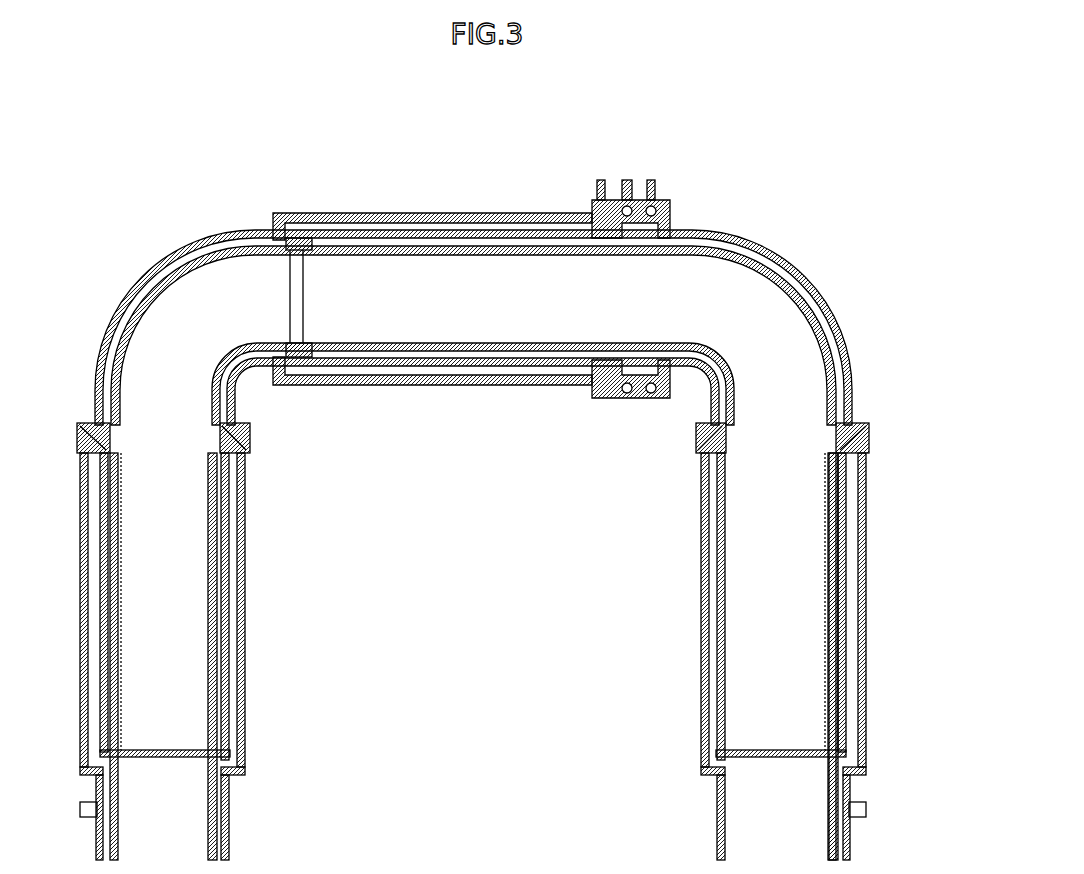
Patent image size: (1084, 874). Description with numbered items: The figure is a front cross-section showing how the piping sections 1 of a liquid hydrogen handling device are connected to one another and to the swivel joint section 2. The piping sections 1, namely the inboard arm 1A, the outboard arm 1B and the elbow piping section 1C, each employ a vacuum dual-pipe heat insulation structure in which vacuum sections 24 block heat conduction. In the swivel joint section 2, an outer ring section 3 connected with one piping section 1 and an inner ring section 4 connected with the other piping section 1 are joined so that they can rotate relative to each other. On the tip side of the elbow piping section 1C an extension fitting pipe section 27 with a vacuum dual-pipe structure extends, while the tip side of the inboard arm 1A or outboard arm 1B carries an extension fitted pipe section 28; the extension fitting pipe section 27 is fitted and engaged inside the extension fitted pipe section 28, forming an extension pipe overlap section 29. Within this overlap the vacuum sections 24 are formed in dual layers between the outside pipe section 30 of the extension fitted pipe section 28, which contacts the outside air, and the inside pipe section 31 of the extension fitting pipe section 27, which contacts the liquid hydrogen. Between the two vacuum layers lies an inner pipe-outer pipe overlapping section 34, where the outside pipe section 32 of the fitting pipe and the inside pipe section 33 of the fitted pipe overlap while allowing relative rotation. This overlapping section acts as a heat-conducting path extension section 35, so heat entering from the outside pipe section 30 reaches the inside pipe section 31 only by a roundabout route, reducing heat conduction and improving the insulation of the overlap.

The piping section 1 is at (479, 508).
The inboard arm 1A is at (715, 790).
The outboard arm 1B is at (238, 800).
The elbow piping section 1C is at (168, 262).
The swivel joint section 2 is at (535, 185).
The outer ring section 3 is at (423, 210).
The inner ring section 4 is at (560, 338).
The vacuum section 24 is at (220, 580).
The extension fitting pipe section 27 is at (208, 509).
The extension fitted pipe section 28 is at (252, 480).
The extension pipe overlap section 29 is at (265, 568).
The outside pipe section of the extension fitted pipe section 30 is at (248, 678).
The inside pipe section of the extension fitting pipe section 31 is at (213, 626).
The outside pipe section of the extension fitting pipe section 32 is at (218, 672).
The inside pipe section of the extension fitted pipe section 33 is at (233, 730).
The inner pipe-outer pipe overlapping section 34 is at (227, 532).
The heat-conducting path extension section 35 is at (300, 526).